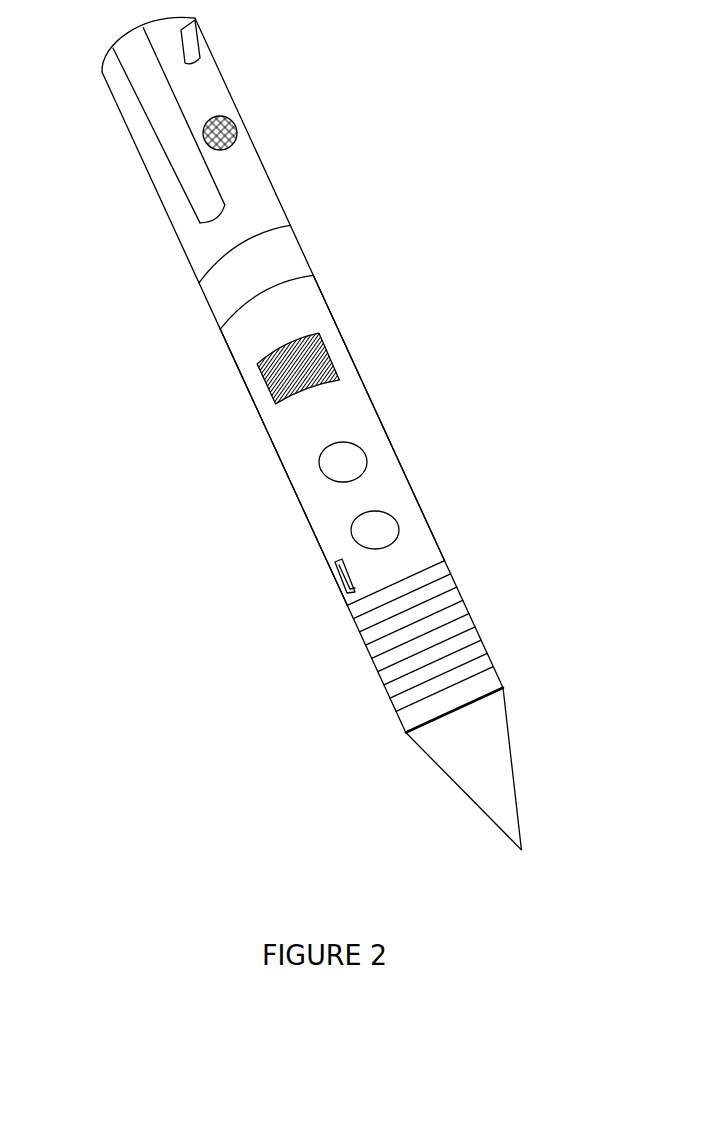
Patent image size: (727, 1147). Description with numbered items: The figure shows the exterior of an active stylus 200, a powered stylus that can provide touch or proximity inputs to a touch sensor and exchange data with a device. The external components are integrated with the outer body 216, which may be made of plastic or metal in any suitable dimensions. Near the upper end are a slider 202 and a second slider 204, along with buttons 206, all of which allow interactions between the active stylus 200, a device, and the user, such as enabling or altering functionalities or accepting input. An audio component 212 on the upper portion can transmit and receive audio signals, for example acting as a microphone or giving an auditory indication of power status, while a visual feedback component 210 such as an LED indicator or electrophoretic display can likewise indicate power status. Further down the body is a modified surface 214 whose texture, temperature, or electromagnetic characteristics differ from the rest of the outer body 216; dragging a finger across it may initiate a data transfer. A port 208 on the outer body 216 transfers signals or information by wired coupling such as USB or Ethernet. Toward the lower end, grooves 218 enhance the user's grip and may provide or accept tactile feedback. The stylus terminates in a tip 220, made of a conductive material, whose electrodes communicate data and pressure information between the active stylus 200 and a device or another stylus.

The active stylus 200 is at (468, 265).
The slider 202 is at (160, 110).
The slider 204 is at (222, 292).
The buttons 206 is at (348, 527).
The port 208 is at (342, 578).
The visual feedback component 210 is at (176, 35).
The audio component 212 is at (238, 128).
The modified surface 214 is at (305, 357).
The outer body 216 is at (377, 412).
The grooves 218 is at (450, 607).
The tip 220 is at (513, 758).